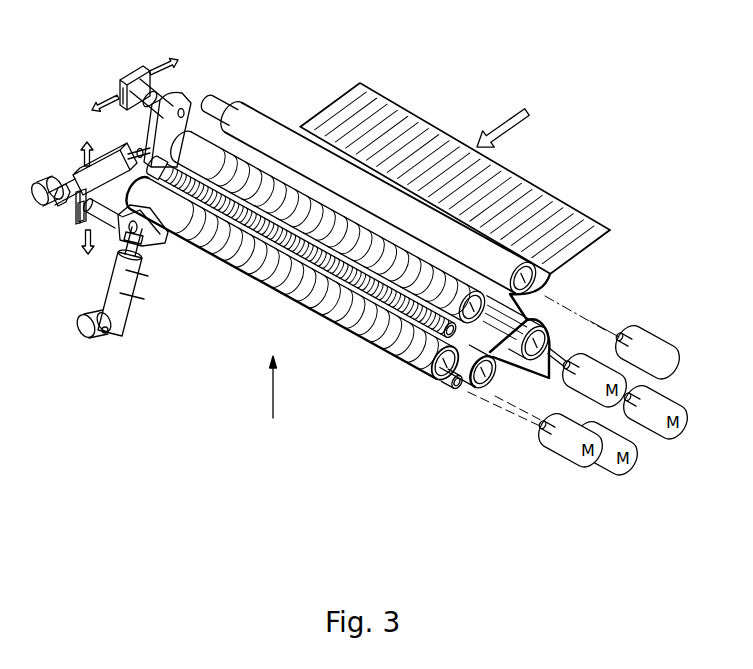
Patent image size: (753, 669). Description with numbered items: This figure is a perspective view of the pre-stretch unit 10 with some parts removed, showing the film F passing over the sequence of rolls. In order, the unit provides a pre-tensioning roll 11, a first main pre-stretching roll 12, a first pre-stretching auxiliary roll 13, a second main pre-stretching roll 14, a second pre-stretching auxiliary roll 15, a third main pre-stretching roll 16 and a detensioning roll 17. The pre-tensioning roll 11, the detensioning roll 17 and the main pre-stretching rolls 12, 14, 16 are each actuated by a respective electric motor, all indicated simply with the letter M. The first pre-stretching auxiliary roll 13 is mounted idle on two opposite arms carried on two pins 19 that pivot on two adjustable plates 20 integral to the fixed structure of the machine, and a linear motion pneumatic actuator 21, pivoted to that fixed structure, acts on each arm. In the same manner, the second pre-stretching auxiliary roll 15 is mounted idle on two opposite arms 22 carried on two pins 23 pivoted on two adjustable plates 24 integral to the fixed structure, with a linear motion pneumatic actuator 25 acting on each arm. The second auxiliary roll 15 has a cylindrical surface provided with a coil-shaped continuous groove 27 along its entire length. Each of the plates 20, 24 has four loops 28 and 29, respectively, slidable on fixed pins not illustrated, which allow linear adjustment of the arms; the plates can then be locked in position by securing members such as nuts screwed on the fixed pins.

The pre-stretch unit 10 is at (272, 400).
The pre-tensioning roll 11 is at (530, 277).
The first main pre-stretching roll 12 is at (540, 318).
The first pre-stretching auxiliary roll 13 is at (388, 318).
The second main pre-stretching roll 14 is at (292, 307).
The second pre-stretching auxiliary roll 15 is at (458, 388).
The third main pre-stretching roll 16 is at (483, 393).
The detensioning roll 17 is at (568, 328).
The pins 19 is at (160, 102).
The adjustable plates 20 is at (117, 92).
The linear motion pneumatic actuator 21 is at (84, 178).
The arms 22 is at (148, 235).
The pins 23 is at (110, 218).
The adjustable plates 24 is at (100, 215).
The linear motion pneumatic actuator 25 is at (128, 312).
The coil-shaped continuous groove 27 is at (440, 366).
The loops 28 is at (152, 72).
The loops 29 is at (75, 217).
The film F is at (550, 198).